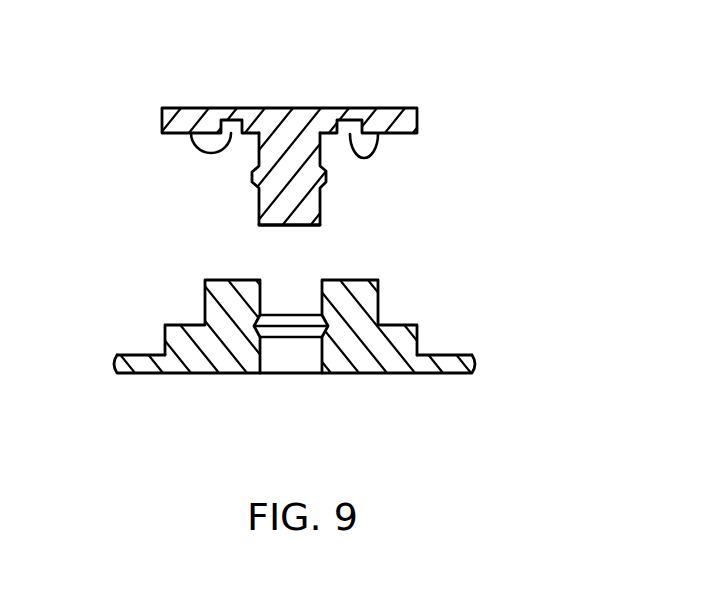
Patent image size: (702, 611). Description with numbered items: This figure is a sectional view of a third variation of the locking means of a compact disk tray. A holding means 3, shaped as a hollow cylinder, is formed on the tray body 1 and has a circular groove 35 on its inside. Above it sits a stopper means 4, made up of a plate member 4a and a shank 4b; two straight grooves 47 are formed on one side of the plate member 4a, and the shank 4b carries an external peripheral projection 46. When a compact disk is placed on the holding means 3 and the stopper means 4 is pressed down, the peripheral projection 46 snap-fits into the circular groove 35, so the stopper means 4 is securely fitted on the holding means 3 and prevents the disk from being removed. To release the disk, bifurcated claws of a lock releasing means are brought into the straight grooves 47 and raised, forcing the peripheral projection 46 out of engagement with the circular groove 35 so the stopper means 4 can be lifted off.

The tray body 1 is at (458, 354).
The holding means 3 is at (417, 298).
The circular groove 35 is at (322, 326).
The stopper means 4 is at (309, 124).
The plate member 4a is at (417, 108).
The shank 4b is at (260, 213).
The external peripheral projection 46 is at (327, 178).
The straight grooves 47 is at (191, 138).